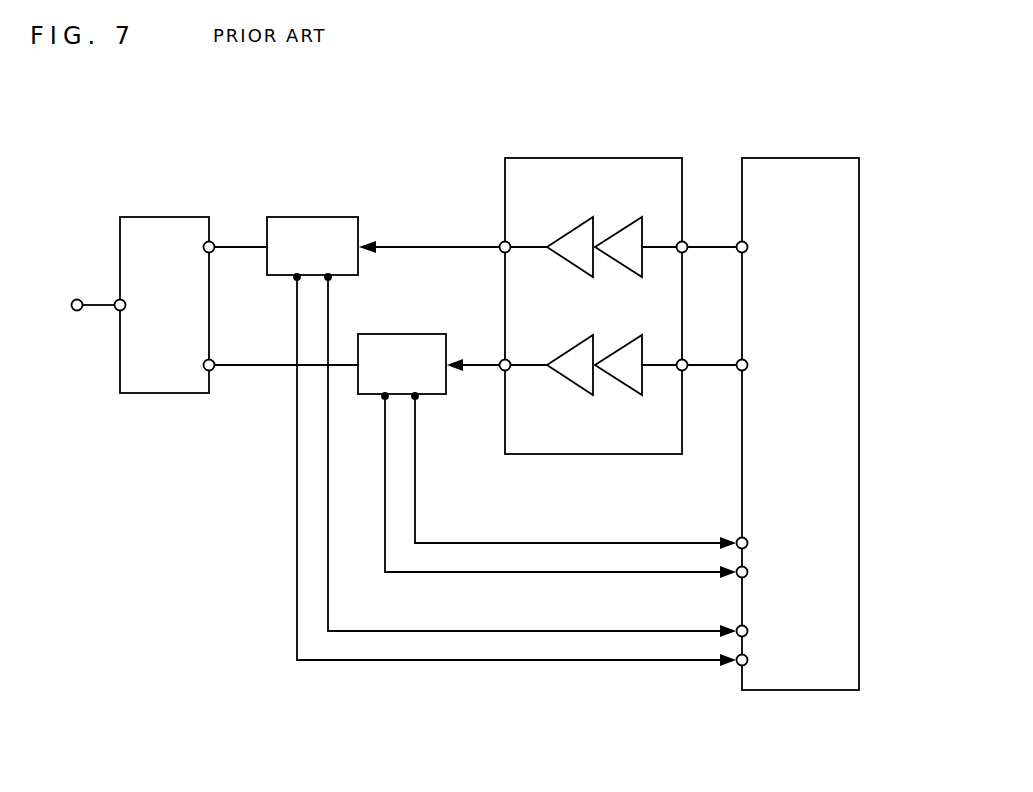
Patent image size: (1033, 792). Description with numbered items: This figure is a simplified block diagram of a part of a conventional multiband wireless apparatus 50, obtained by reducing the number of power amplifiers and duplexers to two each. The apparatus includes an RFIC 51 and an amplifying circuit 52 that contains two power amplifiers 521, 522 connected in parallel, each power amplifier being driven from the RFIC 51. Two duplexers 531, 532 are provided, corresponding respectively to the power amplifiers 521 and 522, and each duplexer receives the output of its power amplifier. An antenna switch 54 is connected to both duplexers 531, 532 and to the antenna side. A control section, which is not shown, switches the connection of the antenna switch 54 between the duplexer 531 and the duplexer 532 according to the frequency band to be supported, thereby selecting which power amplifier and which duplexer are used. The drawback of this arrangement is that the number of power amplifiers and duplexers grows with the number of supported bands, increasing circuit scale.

The multiband wireless apparatus 50 is at (804, 114).
The RFIC 51 is at (808, 690).
The amplifying circuit 52 is at (582, 158).
The power amplifier 521 is at (578, 276).
The power amplifier 522 is at (574, 388).
The duplexer 531 is at (323, 214).
The duplexer 532 is at (400, 334).
The antenna switch 54 is at (185, 393).